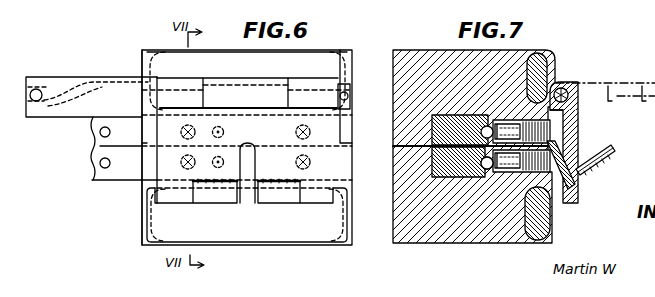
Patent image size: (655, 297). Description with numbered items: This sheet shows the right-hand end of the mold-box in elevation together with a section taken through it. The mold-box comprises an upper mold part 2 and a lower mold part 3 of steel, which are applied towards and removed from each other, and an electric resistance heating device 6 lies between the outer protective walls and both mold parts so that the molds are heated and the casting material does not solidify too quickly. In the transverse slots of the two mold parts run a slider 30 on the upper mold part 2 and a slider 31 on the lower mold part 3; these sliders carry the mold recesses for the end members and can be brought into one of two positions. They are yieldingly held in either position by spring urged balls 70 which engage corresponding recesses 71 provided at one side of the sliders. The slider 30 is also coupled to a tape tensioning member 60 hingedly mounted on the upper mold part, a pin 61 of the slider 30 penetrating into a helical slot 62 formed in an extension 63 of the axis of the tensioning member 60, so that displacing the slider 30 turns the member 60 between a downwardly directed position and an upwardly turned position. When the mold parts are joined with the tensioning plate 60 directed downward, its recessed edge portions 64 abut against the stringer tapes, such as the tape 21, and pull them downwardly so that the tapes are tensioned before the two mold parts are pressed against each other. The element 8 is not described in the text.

In FIG. 7, the upper mold part 2 is at (407, 51).
In FIG. 7, the lower mold part 3 is at (405, 238).
In FIG. 6, the electric resistance heating device 6 is at (308, 57).
In FIG. 7, the electric resistance heating device 6 is at (550, 77).
In FIG. 7, the lower cross bar 8 is at (531, 242).
In FIG. 7, the stringer tape 21 is at (613, 152).
In FIG. 6, the slider 30 is at (97, 140).
In FIG. 7, the slider 30 is at (442, 133).
In FIG. 6, the slider 31 is at (103, 176).
In FIG. 7, the slider 31 is at (442, 164).
In FIG. 6, the tape tensioning member 60 is at (167, 162).
In FIG. 7, the tape tensioning member 60 is at (578, 117).
In FIG. 6, the pin 61 is at (53, 86).
In FIG. 6, the helical slot 62 is at (73, 82).
In FIG. 6, the extension 63 is at (58, 114).
In FIG. 6, the recessed edge portions 64 is at (223, 184).
In FIG. 7, the recessed edge portions 64 is at (575, 184).
In FIG. 6, the spring urged balls 70 is at (190, 170).
In FIG. 7, the spring urged balls 70 is at (486, 126).
In FIG. 6, the recesses 71 is at (98, 167).
In FIG. 7, the recesses 71 is at (485, 169).